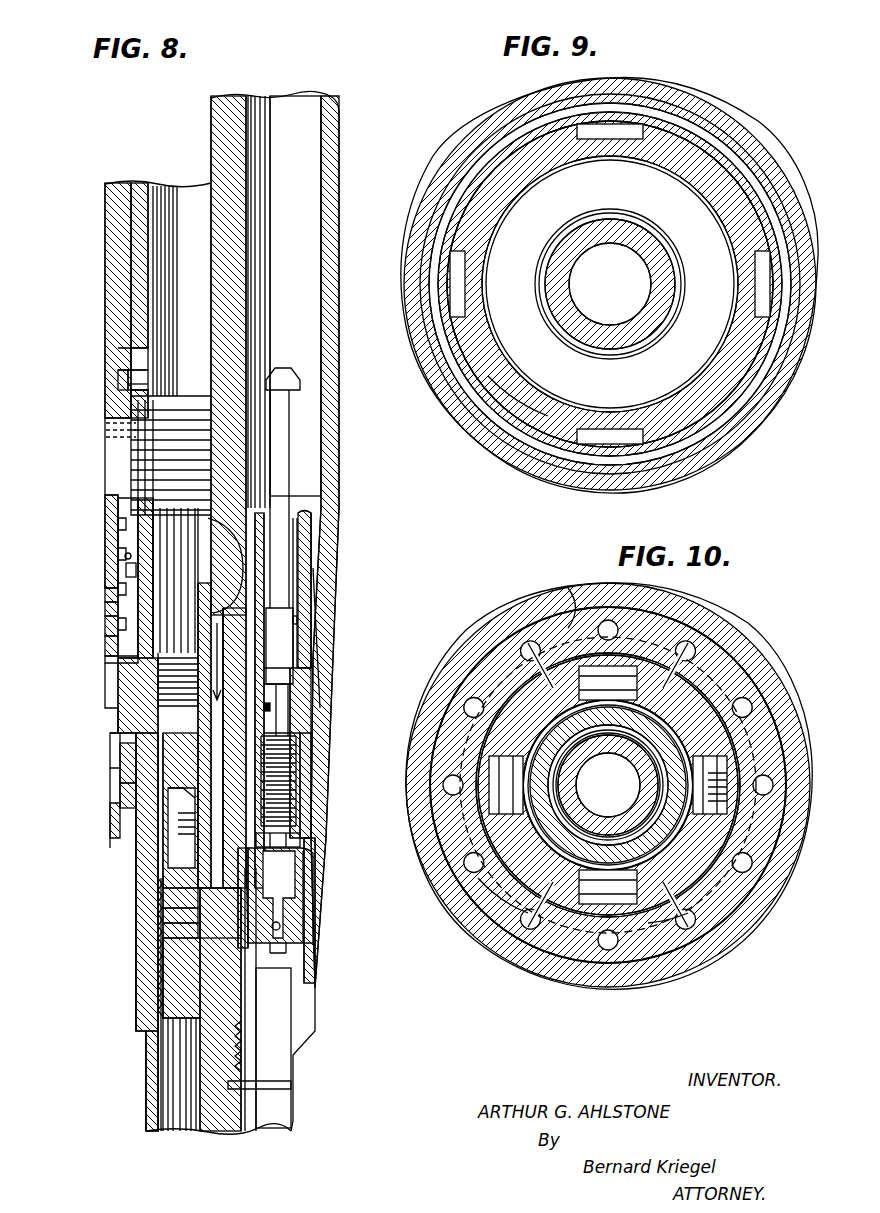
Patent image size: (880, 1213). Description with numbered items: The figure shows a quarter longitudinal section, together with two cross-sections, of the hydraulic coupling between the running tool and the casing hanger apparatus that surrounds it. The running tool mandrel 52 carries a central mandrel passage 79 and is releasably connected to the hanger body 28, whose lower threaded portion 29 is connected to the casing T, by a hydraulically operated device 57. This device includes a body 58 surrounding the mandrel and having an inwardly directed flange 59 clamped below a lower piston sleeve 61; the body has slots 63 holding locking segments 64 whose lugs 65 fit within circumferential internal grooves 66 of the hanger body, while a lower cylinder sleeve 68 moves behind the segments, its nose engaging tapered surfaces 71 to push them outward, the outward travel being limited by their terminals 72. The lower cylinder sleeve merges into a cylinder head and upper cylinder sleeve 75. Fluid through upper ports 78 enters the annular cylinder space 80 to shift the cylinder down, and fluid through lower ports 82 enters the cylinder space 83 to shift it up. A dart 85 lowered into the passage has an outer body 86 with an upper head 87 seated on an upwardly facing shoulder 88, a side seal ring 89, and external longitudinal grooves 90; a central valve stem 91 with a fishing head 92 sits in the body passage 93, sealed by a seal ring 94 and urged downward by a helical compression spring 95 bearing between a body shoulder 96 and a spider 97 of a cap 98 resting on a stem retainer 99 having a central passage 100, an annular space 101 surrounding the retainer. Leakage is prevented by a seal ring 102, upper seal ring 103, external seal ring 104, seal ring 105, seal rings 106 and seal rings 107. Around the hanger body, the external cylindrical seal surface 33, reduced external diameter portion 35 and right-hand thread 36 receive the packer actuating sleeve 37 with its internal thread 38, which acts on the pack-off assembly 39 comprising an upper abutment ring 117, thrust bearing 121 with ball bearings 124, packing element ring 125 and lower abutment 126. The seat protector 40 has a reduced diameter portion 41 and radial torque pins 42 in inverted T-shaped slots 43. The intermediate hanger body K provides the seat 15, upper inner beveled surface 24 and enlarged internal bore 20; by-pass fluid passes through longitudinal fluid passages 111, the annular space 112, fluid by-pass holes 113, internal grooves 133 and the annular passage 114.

In FIG. 8, the annular passage 114 is at (165, 208).
In FIG. 8, the seat protector 40 is at (97, 272).
In FIG. 8, the running tool mandrel 52 is at (228, 236).
In FIG. 9, the running tool mandrel 52 is at (635, 324).
In FIG. 10, the running tool mandrel 52 is at (598, 734).
In FIG. 8, the central mandrel passage 79 is at (295, 296).
In FIG. 9, the central mandrel passage 79 is at (610, 284).
In FIG. 10, the central mandrel passage 79 is at (608, 785).
In FIG. 8, the upper inner beveled surface 24 is at (125, 340).
In FIG. 8, the reduced diameter portion 41 is at (132, 352).
In FIG. 8, the inverted T-shaped slots 43 is at (110, 370).
In FIG. 8, the radial torque pins 42 is at (140, 371).
In FIG. 8, the fishing head 92 is at (292, 370).
In FIG. 8, the fluid by-pass holes 113 is at (98, 427).
In FIG. 8, the internal thread 38 is at (123, 455).
In FIG. 8, the packer actuating sleeve 37 is at (97, 496).
In FIG. 9, the packer actuating sleeve 37 is at (510, 164).
In FIG. 8, the ball bearings 124 is at (120, 556).
In FIG. 8, the thrust bearing 121 is at (116, 548).
In FIG. 8, the upper abutment ring 117 is at (97, 584).
In FIG. 8, the pack-off assembly 39 is at (97, 600).
In FIG. 8, the packing element ring 125 is at (97, 618).
In FIG. 8, the upper seal ring 103 is at (110, 638).
In FIG. 8, the lower abutment 126 is at (110, 655).
In FIG. 8, the upper cylinder sleeve 75 is at (170, 655).
In FIG. 8, the external cylindrical seal surface 33 is at (150, 655).
In FIG. 8, the annular cylinder space 80 is at (185, 665).
In FIG. 8, the hydraulically operated device 57 is at (102, 725).
In FIG. 8, the external seal ring 104 is at (114, 745).
In FIG. 8, the lower cylinder sleeve 68 is at (114, 783).
In FIG. 10, the lower cylinder sleeve 68 is at (720, 779).
In FIG. 8, the seat 15 is at (102, 806).
In FIG. 8, the locking segments 64 is at (170, 805).
In FIG. 10, the locking segments 64 is at (630, 659).
In FIG. 8, the lower piston sleeve 61 is at (175, 830).
In FIG. 10, the lower piston sleeve 61 is at (505, 674).
In FIG. 8, the hanger body 28 is at (128, 875).
In FIG. 10, the hanger body 28 is at (745, 649).
In FIG. 8, the lower ports 82 is at (165, 885).
In FIG. 10, the lower ports 82 is at (555, 766).
In FIG. 8, the seal ring 105 is at (165, 902).
In FIG. 8, the seal rings 106 is at (165, 920).
In FIG. 8, the body 58 is at (175, 940).
In FIG. 10, the body 58 is at (570, 594).
In FIG. 8, the lower threaded portion 29 is at (152, 952).
In FIG. 8, the seal rings 107 is at (200, 960).
In FIG. 8, the upper ports 78 is at (240, 580).
In FIG. 8, the upper head 87 is at (300, 528).
In FIG. 8, the upwardly facing shoulder 88 is at (306, 562).
In FIG. 8, the body passage 93 is at (290, 576).
In FIG. 8, the external longitudinal grooves 90 is at (308, 594).
In FIG. 8, the seal ring 94 is at (290, 606).
In FIG. 8, the central valve stem 91 is at (278, 637).
In FIG. 8, the dart 85 is at (290, 654).
In FIG. 8, the outer body 86 is at (284, 685).
In FIG. 8, the seal ring 102 is at (262, 697).
In FIG. 8, the body shoulder 96 is at (292, 718).
In FIG. 8, the side seal ring 89 is at (307, 738).
In FIG. 8, the helical compression spring 95 is at (289, 775).
In FIG. 8, the spider 97 is at (292, 828).
In FIG. 8, the cap 98 is at (287, 858).
In FIG. 8, the annular space 101 is at (297, 884).
In FIG. 8, the stem retainer 99 is at (280, 914).
In FIG. 8, the central passage 100 is at (280, 928).
In FIG. 8, the inwardly directed flange 59 is at (240, 928).
In FIG. 8, the casing T is at (138, 1094).
In FIG. 9, the internal grooves 133 is at (620, 118).
In FIG. 9, the enlarged internal bore 20 is at (433, 172).
In FIG. 9, the annular space 112 is at (762, 160).
In FIG. 9, the right-hand thread 36 is at (458, 262).
In FIG. 9, the reduced external diameter portion 35 is at (525, 386).
In FIG. 9, the intermediate hanger body K is at (722, 419).
In FIG. 10, the intermediate hanger body K is at (700, 934).
In FIG. 10, the slots 63 is at (540, 654).
In FIG. 10, the lugs 65 is at (705, 694).
In FIG. 10, the tapered surfaces 71 is at (520, 734).
In FIG. 10, the cylinder space 83 is at (530, 764).
In FIG. 10, the longitudinal fluid passages 111 is at (460, 852).
In FIG. 10, the circumferential internal grooves 66 is at (500, 899).
In FIG. 10, the terminals 72 is at (665, 924).